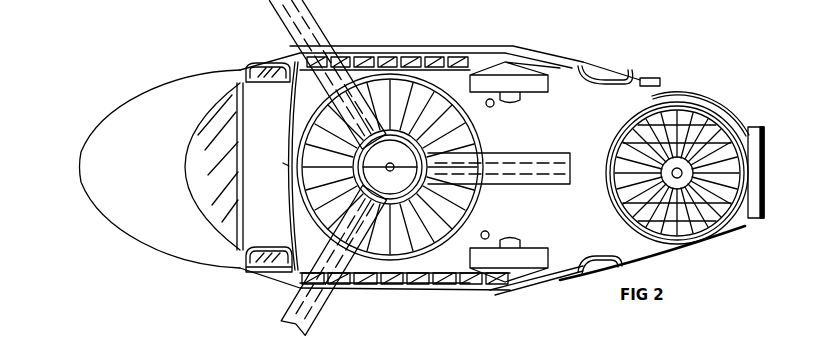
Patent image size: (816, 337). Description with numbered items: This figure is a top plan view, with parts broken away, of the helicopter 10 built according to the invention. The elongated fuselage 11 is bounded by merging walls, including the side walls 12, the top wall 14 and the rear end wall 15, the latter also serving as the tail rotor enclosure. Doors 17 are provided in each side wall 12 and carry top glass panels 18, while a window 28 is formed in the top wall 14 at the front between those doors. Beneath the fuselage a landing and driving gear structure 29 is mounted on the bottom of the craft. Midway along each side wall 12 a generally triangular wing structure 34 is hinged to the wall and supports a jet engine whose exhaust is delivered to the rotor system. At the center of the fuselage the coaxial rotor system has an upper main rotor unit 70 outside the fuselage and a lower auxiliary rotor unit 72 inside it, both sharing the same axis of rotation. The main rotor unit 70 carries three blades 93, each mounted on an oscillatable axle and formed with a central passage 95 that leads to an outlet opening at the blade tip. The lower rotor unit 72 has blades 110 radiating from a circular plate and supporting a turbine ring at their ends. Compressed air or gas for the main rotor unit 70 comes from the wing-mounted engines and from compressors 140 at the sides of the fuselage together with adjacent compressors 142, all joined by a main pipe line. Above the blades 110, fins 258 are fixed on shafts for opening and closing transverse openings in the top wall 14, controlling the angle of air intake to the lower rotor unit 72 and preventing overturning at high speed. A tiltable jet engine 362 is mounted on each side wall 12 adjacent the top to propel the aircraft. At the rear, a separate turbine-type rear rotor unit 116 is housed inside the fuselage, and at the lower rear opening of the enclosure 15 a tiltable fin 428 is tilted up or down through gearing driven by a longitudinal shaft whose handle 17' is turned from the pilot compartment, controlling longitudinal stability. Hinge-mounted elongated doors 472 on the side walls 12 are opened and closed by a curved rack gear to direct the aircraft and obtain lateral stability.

The helicopter 10 is at (84, 200).
The fuselage 11 is at (163, 258).
The side wall 12 is at (246, 63).
The top wall 14 is at (595, 121).
The end wall 15 is at (79, 163).
The door 17 is at (442, 278).
The handle 17' is at (619, 67).
The top glass panel 18 is at (277, 85).
The window 28 is at (192, 176).
The landing and driving gear structure 29 is at (328, 74).
The wing structure 34 is at (436, 47).
The upper main rotor unit 70 is at (400, 162).
The lower auxiliary rotor unit 72 is at (470, 150).
The blade 93 is at (325, 42).
The central passage 95 is at (322, 310).
The blade 110 is at (470, 228).
The rear rotor unit 116 is at (735, 98).
The compressor 140 is at (287, 142).
The compressor 142 is at (288, 197).
The fin 258 is at (462, 103).
The jet engine 362 is at (520, 78).
The tiltable fin 428 is at (764, 156).
The elongated door 472 is at (700, 100).